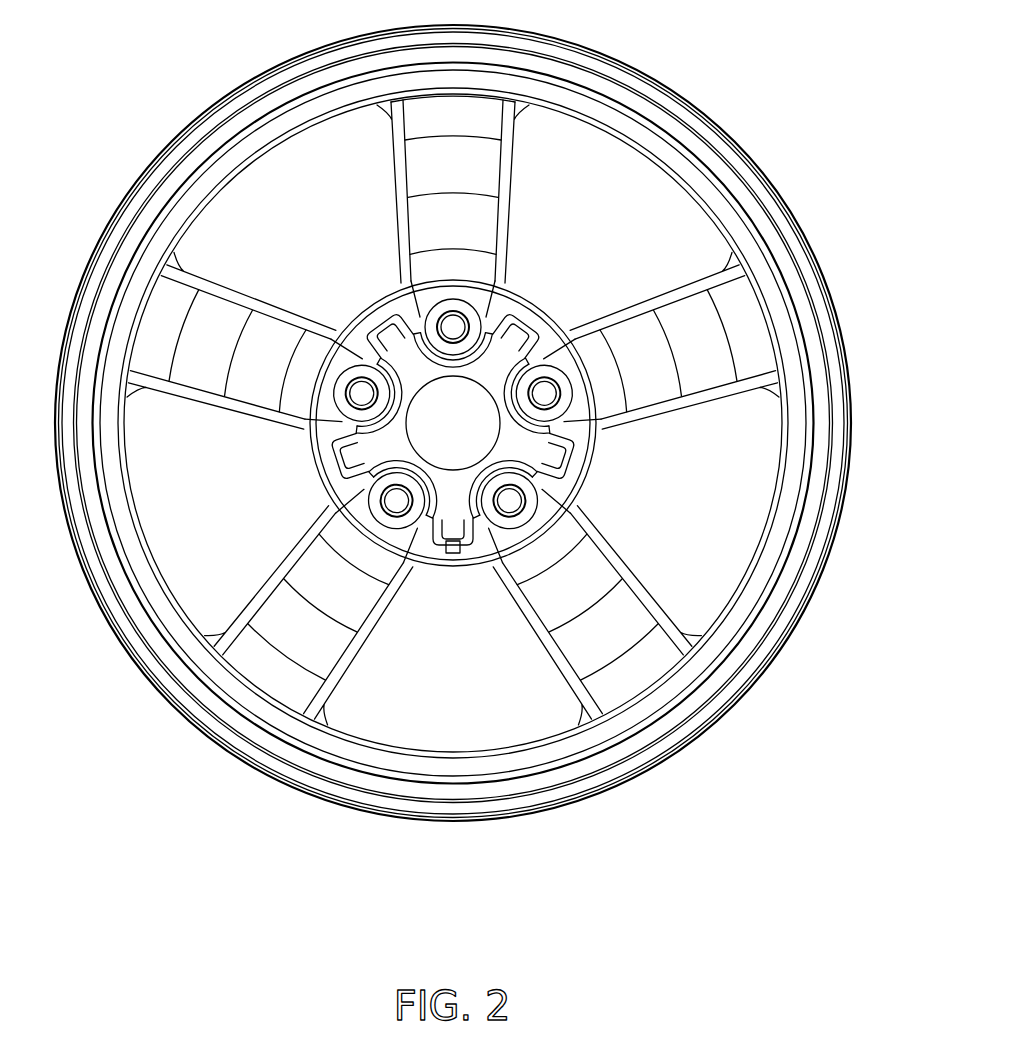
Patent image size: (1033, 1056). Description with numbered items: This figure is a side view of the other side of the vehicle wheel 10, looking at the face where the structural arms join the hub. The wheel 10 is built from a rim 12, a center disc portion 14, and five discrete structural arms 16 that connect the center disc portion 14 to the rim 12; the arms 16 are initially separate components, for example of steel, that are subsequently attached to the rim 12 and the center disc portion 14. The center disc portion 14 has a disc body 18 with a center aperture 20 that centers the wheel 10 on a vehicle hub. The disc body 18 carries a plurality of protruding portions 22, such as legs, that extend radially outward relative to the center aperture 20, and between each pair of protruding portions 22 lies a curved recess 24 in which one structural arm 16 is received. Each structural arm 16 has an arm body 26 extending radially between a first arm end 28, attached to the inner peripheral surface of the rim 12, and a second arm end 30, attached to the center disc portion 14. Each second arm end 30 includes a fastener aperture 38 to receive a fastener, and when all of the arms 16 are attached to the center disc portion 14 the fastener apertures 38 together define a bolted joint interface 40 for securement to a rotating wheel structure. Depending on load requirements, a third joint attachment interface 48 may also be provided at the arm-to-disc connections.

The vehicle wheel 10 is at (80, 155).
The rim 12 is at (697, 131).
The center disc portion 14 is at (453, 497).
The structural arm 16 is at (487, 217).
The disc body 18 is at (378, 469).
The center aperture 20 is at (497, 440).
The protruding portion 22 is at (340, 471).
The curved recess 24 is at (455, 362).
The arm body 26 is at (429, 229).
The first arm end 28 is at (483, 106).
The second arm end 30 is at (502, 316).
The fastener aperture 38 is at (362, 390).
The bolted joint interface 40 is at (467, 566).
The third joint attachment interface 48 is at (418, 325).